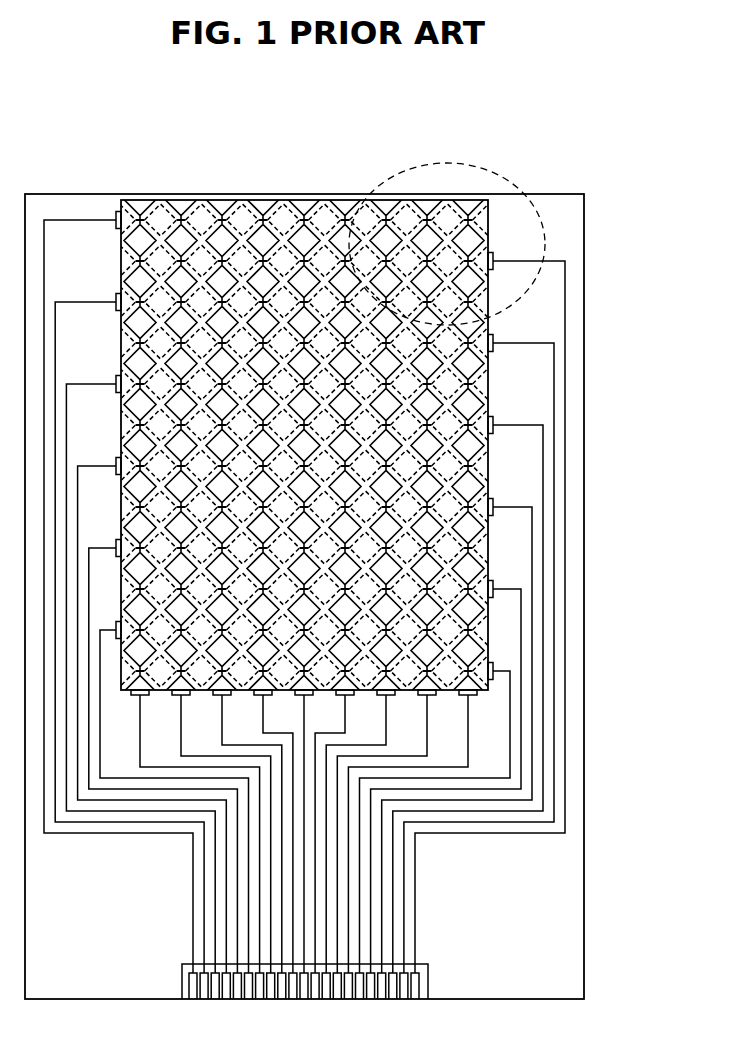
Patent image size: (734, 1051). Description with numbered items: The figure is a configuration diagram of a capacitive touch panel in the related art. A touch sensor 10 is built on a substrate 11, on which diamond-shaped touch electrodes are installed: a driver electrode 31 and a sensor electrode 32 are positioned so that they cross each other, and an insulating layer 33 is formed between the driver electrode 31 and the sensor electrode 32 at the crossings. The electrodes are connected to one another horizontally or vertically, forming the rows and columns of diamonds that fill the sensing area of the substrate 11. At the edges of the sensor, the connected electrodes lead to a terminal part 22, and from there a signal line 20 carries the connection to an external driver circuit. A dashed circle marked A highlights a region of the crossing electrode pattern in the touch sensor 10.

The touch sensor 10 is at (62, 120).
The substrate 11 is at (535, 195).
The signal line 20 is at (490, 313).
The terminal part 22 is at (492, 338).
The driver electrode 31 is at (467, 453).
The sensor electrode 32 is at (467, 363).
The insulating layer 33 is at (476, 208).
The enlarged region A is at (390, 178).